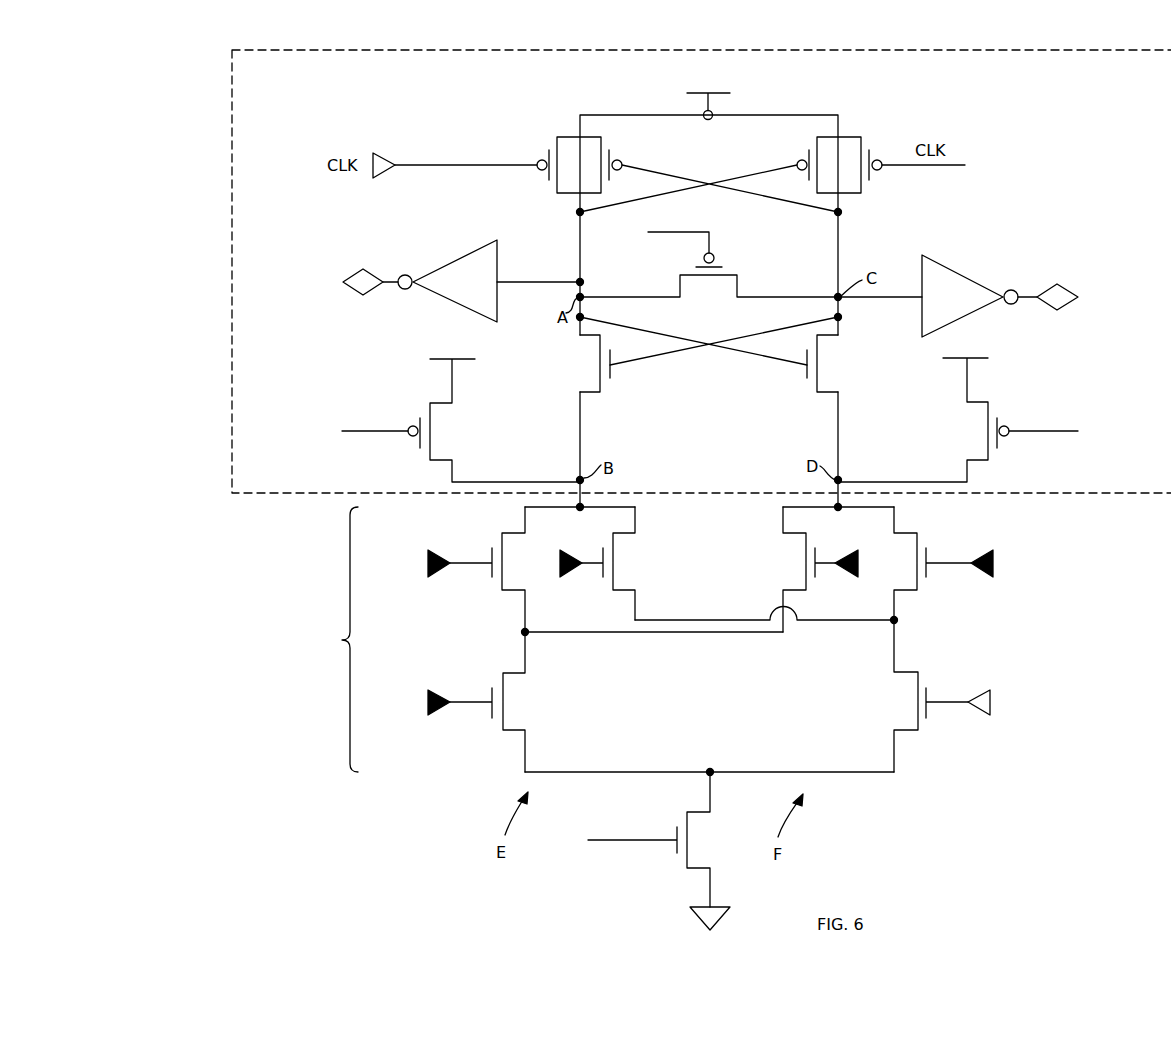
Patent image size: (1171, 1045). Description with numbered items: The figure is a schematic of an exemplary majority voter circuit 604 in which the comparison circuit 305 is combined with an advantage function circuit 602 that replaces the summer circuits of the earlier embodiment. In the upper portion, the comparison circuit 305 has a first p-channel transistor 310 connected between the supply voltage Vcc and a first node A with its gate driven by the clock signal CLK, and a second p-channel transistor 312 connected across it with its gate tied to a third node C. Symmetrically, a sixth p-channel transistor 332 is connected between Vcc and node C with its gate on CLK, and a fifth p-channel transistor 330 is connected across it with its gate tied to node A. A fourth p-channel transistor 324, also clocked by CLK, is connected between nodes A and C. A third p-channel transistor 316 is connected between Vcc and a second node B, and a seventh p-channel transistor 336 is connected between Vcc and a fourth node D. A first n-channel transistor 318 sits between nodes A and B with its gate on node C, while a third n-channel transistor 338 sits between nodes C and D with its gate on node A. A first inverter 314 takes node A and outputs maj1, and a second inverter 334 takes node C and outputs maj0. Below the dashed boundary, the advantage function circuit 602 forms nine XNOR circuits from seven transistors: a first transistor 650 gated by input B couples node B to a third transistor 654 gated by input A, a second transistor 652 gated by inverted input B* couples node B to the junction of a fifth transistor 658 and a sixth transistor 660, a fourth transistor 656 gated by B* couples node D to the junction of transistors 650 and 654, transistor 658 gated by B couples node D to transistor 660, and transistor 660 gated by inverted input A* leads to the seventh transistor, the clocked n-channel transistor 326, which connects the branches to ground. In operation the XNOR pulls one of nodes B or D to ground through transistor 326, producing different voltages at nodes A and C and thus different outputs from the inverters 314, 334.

The majority voter circuit 604 is at (206, 141).
The comparison circuit 305 is at (254, 359).
The first p-channel transistor 310 is at (557, 136).
The second p-channel transistor 312 is at (603, 140).
The fifth p-channel transistor 330 is at (815, 141).
The sixth p-channel transistor 332 is at (862, 138).
The first inverter 314 is at (487, 240).
The second inverter 334 is at (948, 266).
The fourth p-channel transistor 324 is at (742, 276).
The first n-channel transistor 318 is at (601, 393).
The third n-channel transistor 338 is at (839, 393).
The third p-channel transistor 316 is at (453, 403).
The seventh p-channel transistor 336 is at (988, 402).
The advantage function circuit 602 is at (424, 668).
The first transistor 650 is at (502, 592).
The second transistor 652 is at (613, 592).
The fourth transistor 656 is at (806, 590).
The fifth transistor 658 is at (917, 533).
The third transistor 654 is at (503, 730).
The sixth transistor 660 is at (918, 672).
The second n-channel transistor 326 is at (710, 812).